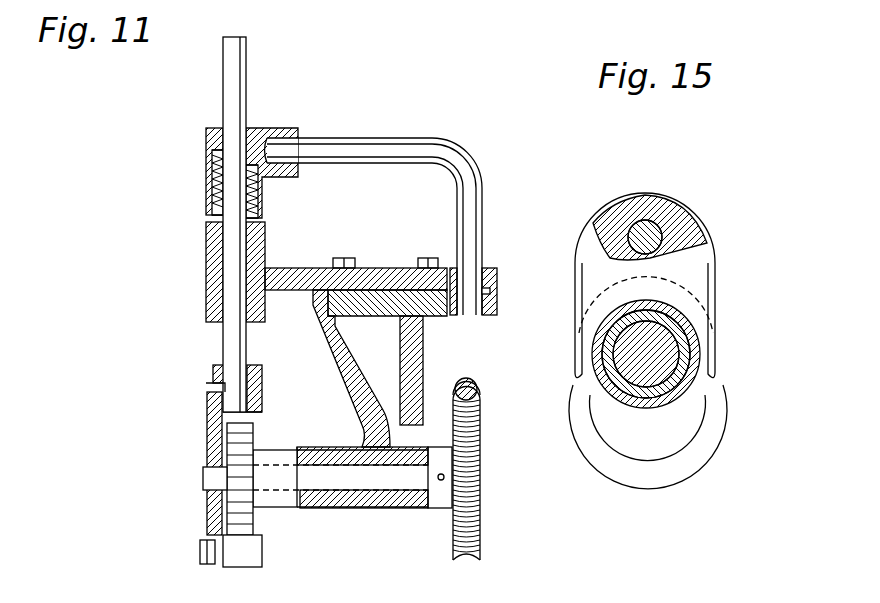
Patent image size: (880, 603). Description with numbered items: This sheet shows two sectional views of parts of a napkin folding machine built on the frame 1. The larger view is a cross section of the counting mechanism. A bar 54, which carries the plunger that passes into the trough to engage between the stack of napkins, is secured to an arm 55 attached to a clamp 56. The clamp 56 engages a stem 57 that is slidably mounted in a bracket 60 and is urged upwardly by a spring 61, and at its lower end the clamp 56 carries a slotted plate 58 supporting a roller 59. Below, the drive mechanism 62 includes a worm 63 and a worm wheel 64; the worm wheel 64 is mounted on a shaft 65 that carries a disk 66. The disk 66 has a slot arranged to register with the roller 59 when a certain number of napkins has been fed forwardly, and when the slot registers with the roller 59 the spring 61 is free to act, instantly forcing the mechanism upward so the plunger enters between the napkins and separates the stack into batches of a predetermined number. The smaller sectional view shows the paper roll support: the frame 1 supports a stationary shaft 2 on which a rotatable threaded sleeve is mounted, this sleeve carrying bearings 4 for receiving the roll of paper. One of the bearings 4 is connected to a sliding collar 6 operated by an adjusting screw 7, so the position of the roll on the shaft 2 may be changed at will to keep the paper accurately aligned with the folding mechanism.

In FIG. 11, the frame 1 is at (405, 352).
In FIG. 11, the bar 54 is at (497, 272).
In FIG. 11, the arm 55 is at (470, 190).
In FIG. 11, the clamp 56 is at (272, 128).
In FIG. 11, the stem 57 is at (233, 58).
In FIG. 11, the slotted plate 58 is at (210, 500).
In FIG. 11, the roller 59 is at (243, 568).
In FIG. 11, the bracket 60 is at (208, 258).
In FIG. 11, the spring 61 is at (258, 215).
In FIG. 11, the drive mechanism 62 is at (455, 438).
In FIG. 11, the worm 63 is at (470, 385).
In FIG. 11, the worm wheel 64 is at (478, 528).
In FIG. 11, the shaft 65 is at (375, 483).
In FIG. 11, the disk 66 is at (255, 515).
In FIG. 15, the stationary shaft 2 is at (660, 362).
In FIG. 15, the bearings 4 is at (678, 415).
In FIG. 15, the sliding collar 6 is at (700, 258).
In FIG. 15, the adjusting screw 7 is at (648, 222).